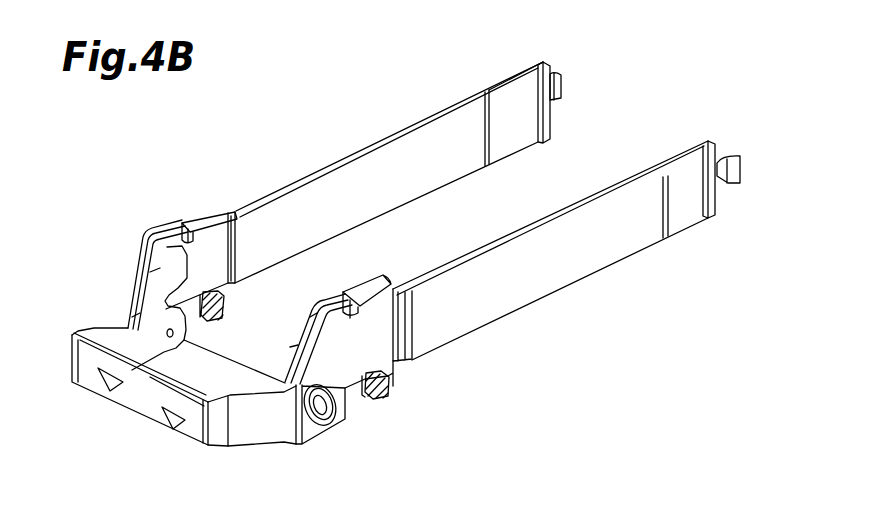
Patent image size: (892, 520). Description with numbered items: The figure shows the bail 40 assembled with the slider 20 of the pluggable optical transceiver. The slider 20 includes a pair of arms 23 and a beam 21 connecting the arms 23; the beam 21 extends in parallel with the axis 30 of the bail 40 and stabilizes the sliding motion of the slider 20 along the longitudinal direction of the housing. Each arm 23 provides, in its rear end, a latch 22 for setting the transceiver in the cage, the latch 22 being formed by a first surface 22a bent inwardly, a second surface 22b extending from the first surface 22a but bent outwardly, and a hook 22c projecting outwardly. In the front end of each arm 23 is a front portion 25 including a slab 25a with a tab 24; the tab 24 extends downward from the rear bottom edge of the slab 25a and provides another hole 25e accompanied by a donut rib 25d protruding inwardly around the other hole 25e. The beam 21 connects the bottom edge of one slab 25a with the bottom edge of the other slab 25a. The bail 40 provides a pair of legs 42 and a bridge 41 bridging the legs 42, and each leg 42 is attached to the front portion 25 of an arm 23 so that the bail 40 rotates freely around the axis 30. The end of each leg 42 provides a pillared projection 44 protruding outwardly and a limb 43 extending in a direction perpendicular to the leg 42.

The slider 20 is at (389, 127).
The beam 21 is at (207, 373).
The latch 22 is at (508, 71).
The first surface 22a is at (683, 218).
The second surface 22b is at (706, 139).
The hook 22c is at (554, 67).
The arm 23 is at (547, 290).
The tab 24 is at (392, 390).
The front portion 25 is at (160, 208).
The slab 25a is at (184, 232).
The donut rib 25d is at (233, 281).
The other hole 25e is at (227, 306).
The axis 30 is at (318, 422).
The bail 40 is at (101, 417).
The bridge 41 is at (139, 398).
The leg 42 is at (108, 340).
The limb 43 is at (138, 263).
The projection 44 is at (320, 405).